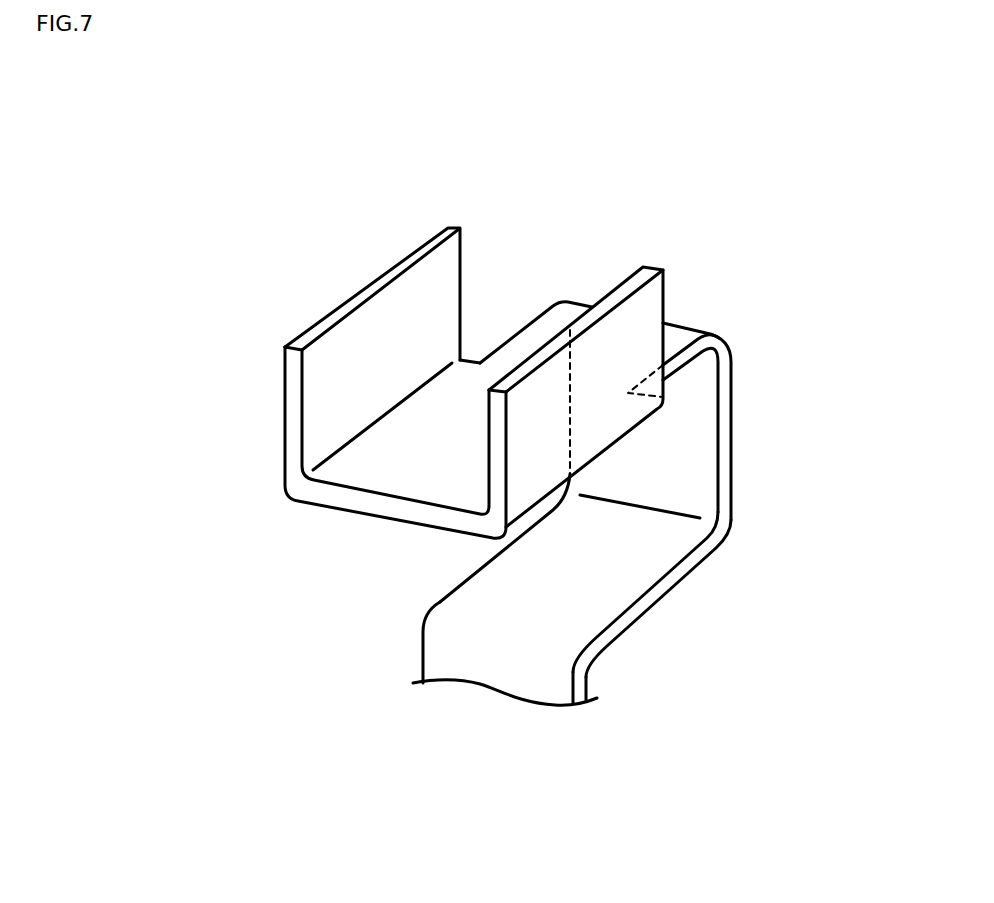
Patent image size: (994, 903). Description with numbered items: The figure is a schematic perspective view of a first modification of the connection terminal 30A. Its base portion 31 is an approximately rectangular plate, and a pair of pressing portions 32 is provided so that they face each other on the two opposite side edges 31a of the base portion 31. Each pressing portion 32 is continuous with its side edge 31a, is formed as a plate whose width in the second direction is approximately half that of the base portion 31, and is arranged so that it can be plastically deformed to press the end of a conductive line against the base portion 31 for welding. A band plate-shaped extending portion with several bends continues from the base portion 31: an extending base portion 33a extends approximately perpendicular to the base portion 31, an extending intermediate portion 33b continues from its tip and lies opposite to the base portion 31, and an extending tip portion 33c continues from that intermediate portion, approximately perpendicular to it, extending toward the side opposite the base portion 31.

The connection terminal 30A is at (578, 170).
The base portion 31 is at (413, 478).
The side edge 31a is at (358, 438).
The pressing portion 32 is at (446, 234).
The extending base portion 33a is at (732, 437).
The extending intermediate portion 33b is at (667, 580).
The extending tip portion 33c is at (518, 658).